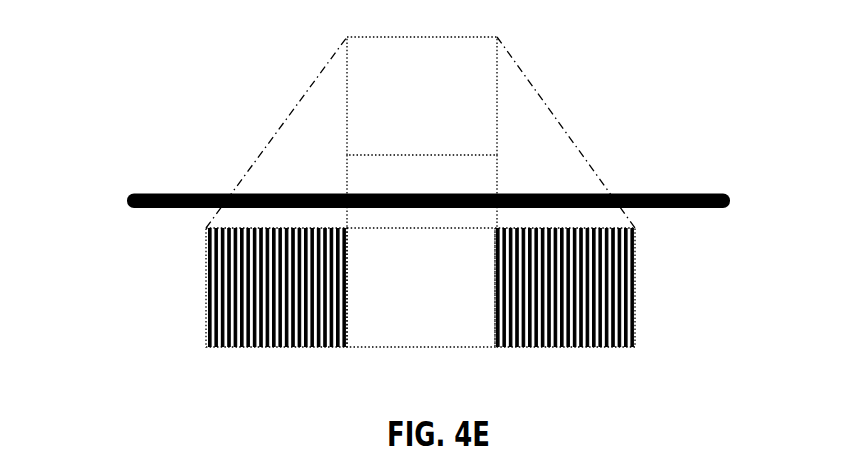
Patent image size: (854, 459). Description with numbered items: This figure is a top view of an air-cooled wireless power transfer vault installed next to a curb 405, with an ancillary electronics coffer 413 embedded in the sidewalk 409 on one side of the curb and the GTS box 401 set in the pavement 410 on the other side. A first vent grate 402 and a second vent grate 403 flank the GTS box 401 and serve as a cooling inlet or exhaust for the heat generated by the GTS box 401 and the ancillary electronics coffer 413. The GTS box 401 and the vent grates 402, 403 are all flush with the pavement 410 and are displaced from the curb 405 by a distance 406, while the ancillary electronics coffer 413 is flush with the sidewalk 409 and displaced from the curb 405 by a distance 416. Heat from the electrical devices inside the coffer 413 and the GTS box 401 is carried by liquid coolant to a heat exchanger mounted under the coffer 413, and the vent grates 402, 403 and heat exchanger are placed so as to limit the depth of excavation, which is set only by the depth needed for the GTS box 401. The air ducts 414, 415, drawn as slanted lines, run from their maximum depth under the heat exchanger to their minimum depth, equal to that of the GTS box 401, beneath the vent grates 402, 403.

The GTS box 401 is at (421, 287).
The first vent grate 402 is at (276, 347).
The second vent grate 403 is at (585, 347).
The curb 405 is at (450, 201).
The distance 406 is at (125, 208).
The sidewalk 409 is at (418, 115).
The pavement 410 is at (418, 287).
The ancillary electronics coffer 413 is at (422, 132).
The air duct 414 is at (291, 111).
The air duct 415 is at (531, 111).
The distance 416 is at (613, 155).